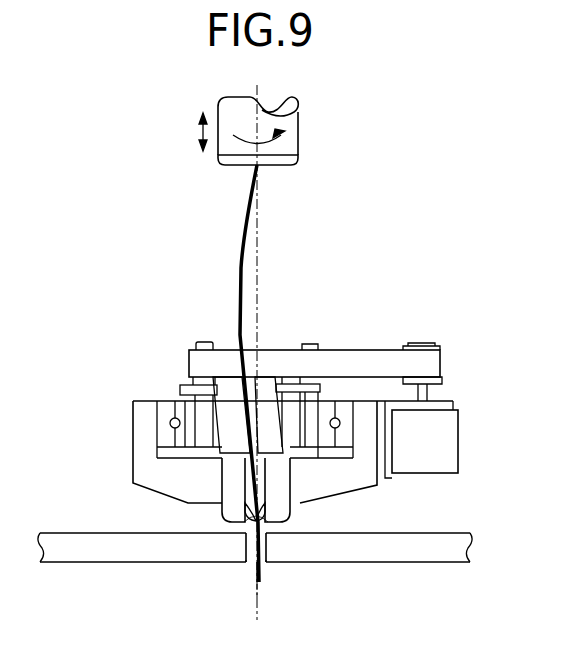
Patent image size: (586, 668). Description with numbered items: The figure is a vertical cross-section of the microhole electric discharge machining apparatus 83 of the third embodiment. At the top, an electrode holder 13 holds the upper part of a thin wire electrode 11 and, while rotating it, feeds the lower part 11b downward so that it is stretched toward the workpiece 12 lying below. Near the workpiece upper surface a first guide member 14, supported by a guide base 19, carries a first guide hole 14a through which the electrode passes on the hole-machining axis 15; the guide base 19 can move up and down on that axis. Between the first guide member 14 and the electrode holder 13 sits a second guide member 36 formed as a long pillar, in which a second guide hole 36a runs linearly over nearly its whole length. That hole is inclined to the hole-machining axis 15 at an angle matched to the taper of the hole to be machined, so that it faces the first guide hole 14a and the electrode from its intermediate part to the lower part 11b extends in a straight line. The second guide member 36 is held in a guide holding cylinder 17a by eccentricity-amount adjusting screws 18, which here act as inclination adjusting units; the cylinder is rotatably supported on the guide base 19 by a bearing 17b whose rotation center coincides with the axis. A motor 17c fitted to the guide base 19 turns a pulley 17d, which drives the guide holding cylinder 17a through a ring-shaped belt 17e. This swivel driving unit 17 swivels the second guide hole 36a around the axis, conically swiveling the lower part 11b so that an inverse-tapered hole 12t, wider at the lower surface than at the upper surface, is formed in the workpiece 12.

The microhole electric discharge machining apparatus 83 is at (404, 178).
The electrode holder 13 is at (299, 129).
The thin wire electrode 11 is at (241, 228).
The swivel driving unit 17 is at (423, 290).
The ring-shaped belt 17e is at (395, 348).
The guide holding cylinder 17a is at (310, 344).
The bearing 17b is at (342, 410).
The motor 17c is at (460, 445).
The pulley 17d is at (441, 345).
The eccentricity-amount adjusting screws 18 is at (178, 386).
The guide base 19 is at (140, 413).
The second guide hole 36a is at (233, 412).
The second guide member 36 is at (264, 390).
The first guide member 14 is at (281, 489).
The first guide hole 14a is at (248, 526).
The workpiece 12 is at (80, 548).
The inverse-tapered hole 12t is at (250, 565).
The lower part of the thin wire electrode 11b is at (264, 570).
The hole-machining axis 15 is at (266, 595).